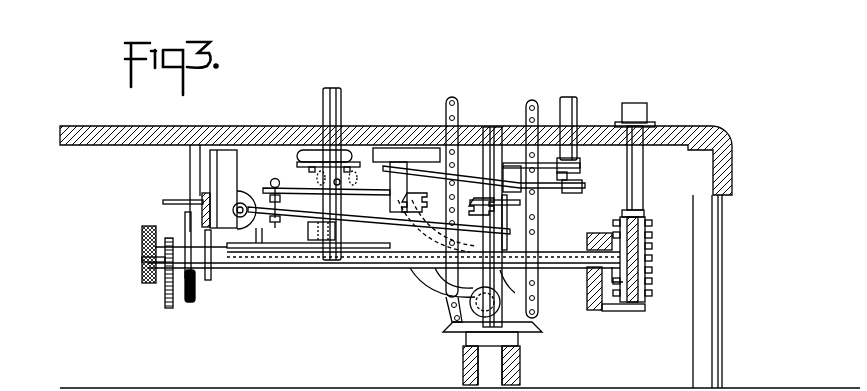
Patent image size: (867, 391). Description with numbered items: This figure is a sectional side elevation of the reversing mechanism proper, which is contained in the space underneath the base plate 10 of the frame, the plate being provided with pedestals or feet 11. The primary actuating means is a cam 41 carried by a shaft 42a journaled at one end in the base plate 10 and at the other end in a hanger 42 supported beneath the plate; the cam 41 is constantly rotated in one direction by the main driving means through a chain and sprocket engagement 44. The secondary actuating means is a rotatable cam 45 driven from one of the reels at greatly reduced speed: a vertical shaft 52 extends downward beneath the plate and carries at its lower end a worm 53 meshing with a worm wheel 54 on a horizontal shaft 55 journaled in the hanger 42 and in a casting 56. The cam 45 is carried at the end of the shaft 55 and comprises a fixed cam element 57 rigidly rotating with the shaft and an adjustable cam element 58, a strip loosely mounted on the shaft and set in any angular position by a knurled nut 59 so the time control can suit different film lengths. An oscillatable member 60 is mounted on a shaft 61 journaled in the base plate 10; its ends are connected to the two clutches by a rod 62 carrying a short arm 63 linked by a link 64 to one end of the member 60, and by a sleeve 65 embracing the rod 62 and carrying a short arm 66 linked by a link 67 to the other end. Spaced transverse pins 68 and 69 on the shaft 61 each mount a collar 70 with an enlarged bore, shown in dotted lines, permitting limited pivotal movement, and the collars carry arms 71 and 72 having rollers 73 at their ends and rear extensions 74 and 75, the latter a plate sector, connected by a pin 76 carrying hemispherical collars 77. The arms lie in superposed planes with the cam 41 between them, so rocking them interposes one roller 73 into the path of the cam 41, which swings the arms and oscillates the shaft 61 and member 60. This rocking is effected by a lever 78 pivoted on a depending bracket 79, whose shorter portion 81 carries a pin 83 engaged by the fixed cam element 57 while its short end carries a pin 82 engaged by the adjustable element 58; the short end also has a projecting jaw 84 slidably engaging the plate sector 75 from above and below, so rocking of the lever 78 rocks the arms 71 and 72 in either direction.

The base plate 10 is at (205, 128).
The pedestals or feet 11 is at (718, 293).
The cam 41 is at (507, 215).
The hanger 42 is at (594, 233).
The shaft 42a is at (495, 136).
The chain and sprocket engagement 44 is at (459, 104).
The rotatable cam 45 is at (173, 318).
The vertical shaft 52 is at (643, 186).
The worm 53 is at (652, 246).
The worm wheel 54 is at (637, 311).
The horizontal shaft 55 is at (362, 269).
The casting 56 is at (189, 167).
The fixed cam element 57 is at (185, 218).
The adjustable cam element 58 is at (165, 291).
The knurled nut 59 is at (148, 226).
The oscillatable member 60 is at (298, 158).
The shaft 61 is at (341, 99).
The rod 62 is at (583, 186).
The short arm 63 is at (562, 193).
The link 64 is at (515, 190).
The sleeve 65 is at (578, 108).
The short arm 66 is at (581, 166).
The link 67 is at (525, 140).
The transverse pin 68 is at (339, 185).
The transverse pin 69 is at (314, 232).
The collar 70 is at (310, 175).
The arm 71 is at (390, 200).
The arm 72 is at (386, 257).
The projections or rollers 73 is at (474, 199).
The rear extension 74 is at (297, 194).
The rear extension 75 is at (290, 221).
The pin 76 is at (275, 228).
The hemispherical collars 77 is at (272, 180).
The lever 78 is at (205, 194).
The depending bracket 79 is at (230, 190).
The shorter portion 81 is at (211, 278).
The projecting pin 82 is at (170, 200).
The projecting pin 83 is at (199, 289).
The projecting jaw 84 is at (241, 194).